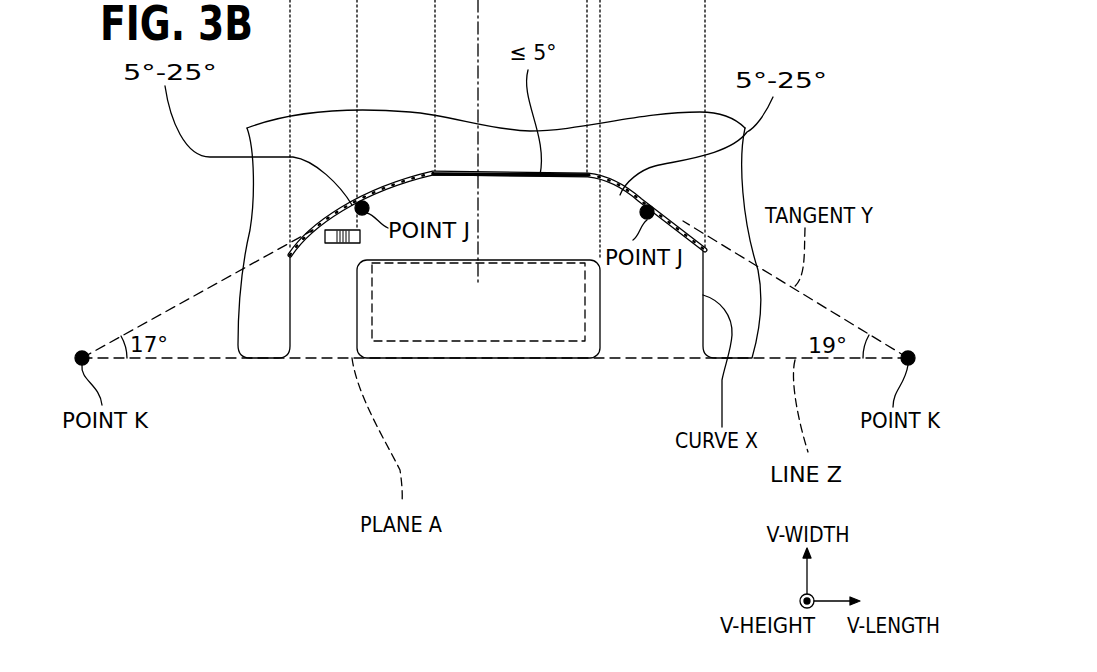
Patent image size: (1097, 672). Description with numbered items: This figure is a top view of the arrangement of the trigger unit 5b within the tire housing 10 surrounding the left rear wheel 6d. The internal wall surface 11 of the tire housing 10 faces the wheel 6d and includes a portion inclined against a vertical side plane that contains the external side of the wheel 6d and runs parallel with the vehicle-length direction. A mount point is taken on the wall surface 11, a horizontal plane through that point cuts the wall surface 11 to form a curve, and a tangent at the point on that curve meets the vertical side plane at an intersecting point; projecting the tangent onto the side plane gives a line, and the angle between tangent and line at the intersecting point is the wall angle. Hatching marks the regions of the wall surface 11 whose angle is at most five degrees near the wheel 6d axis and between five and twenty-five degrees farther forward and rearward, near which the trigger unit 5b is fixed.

The trigger unit 5b is at (332, 243).
The left rear wheel 6d is at (600, 300).
The tire housing 10 is at (703, 328).
The internal wall surface 11 is at (640, 192).